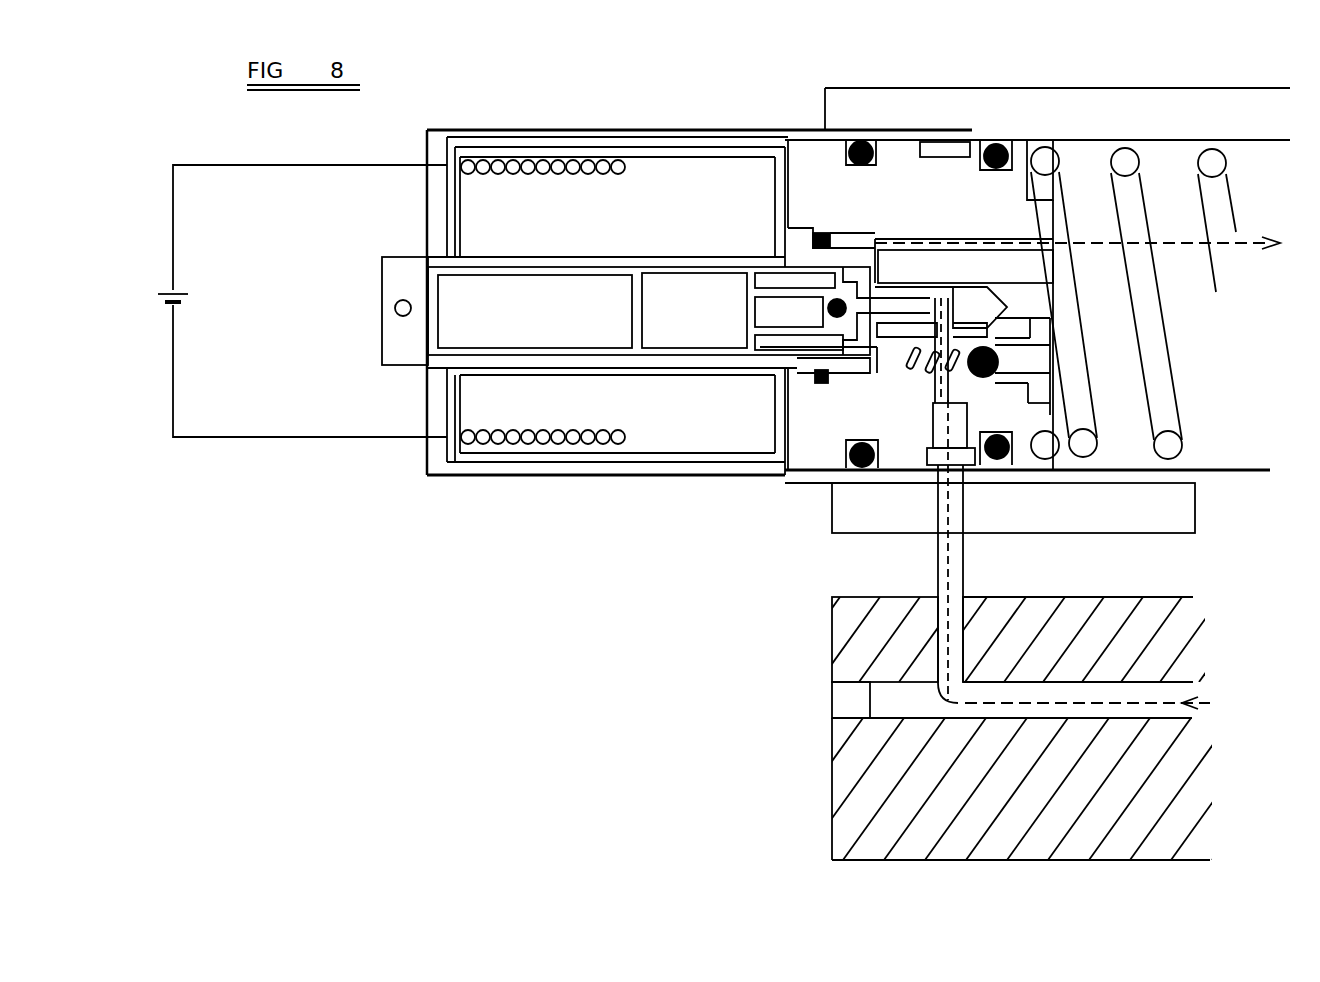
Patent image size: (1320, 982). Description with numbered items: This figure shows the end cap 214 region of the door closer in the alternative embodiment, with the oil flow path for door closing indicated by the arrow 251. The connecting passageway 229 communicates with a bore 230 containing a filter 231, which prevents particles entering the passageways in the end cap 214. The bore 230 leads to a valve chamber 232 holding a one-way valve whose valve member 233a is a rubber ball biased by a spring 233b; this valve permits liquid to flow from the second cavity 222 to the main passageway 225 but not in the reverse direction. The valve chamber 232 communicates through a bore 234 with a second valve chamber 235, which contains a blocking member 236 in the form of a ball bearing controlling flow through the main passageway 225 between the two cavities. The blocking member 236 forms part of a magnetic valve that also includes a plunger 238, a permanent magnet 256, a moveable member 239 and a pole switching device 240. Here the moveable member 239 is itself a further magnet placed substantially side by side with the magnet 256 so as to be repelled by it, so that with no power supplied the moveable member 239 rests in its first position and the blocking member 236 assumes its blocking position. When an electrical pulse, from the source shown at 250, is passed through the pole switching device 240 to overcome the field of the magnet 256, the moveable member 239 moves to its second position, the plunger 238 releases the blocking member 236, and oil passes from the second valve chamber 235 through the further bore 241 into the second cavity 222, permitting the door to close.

The end cap 214 is at (802, 143).
The second cavity 222 is at (1186, 311).
The main passageway 225 is at (1112, 712).
The connecting passageway 229 is at (960, 576).
The bore 230 is at (930, 396).
The filter 231 is at (933, 440).
The valve chamber 232 is at (905, 370).
The valve member 233a is at (1000, 366).
The spring 233b is at (960, 383).
The bore 234 is at (927, 303).
The second valve chamber 235 is at (838, 318).
The blocking member 236 is at (778, 383).
The plunger 238 is at (816, 312).
The moveable member 239 is at (694, 310).
The pole switching device 240 is at (467, 163).
The further bore 241 is at (927, 243).
The power source 250 is at (202, 297).
The arrow 251 is at (1240, 258).
The permanent magnet 256 is at (535, 311).